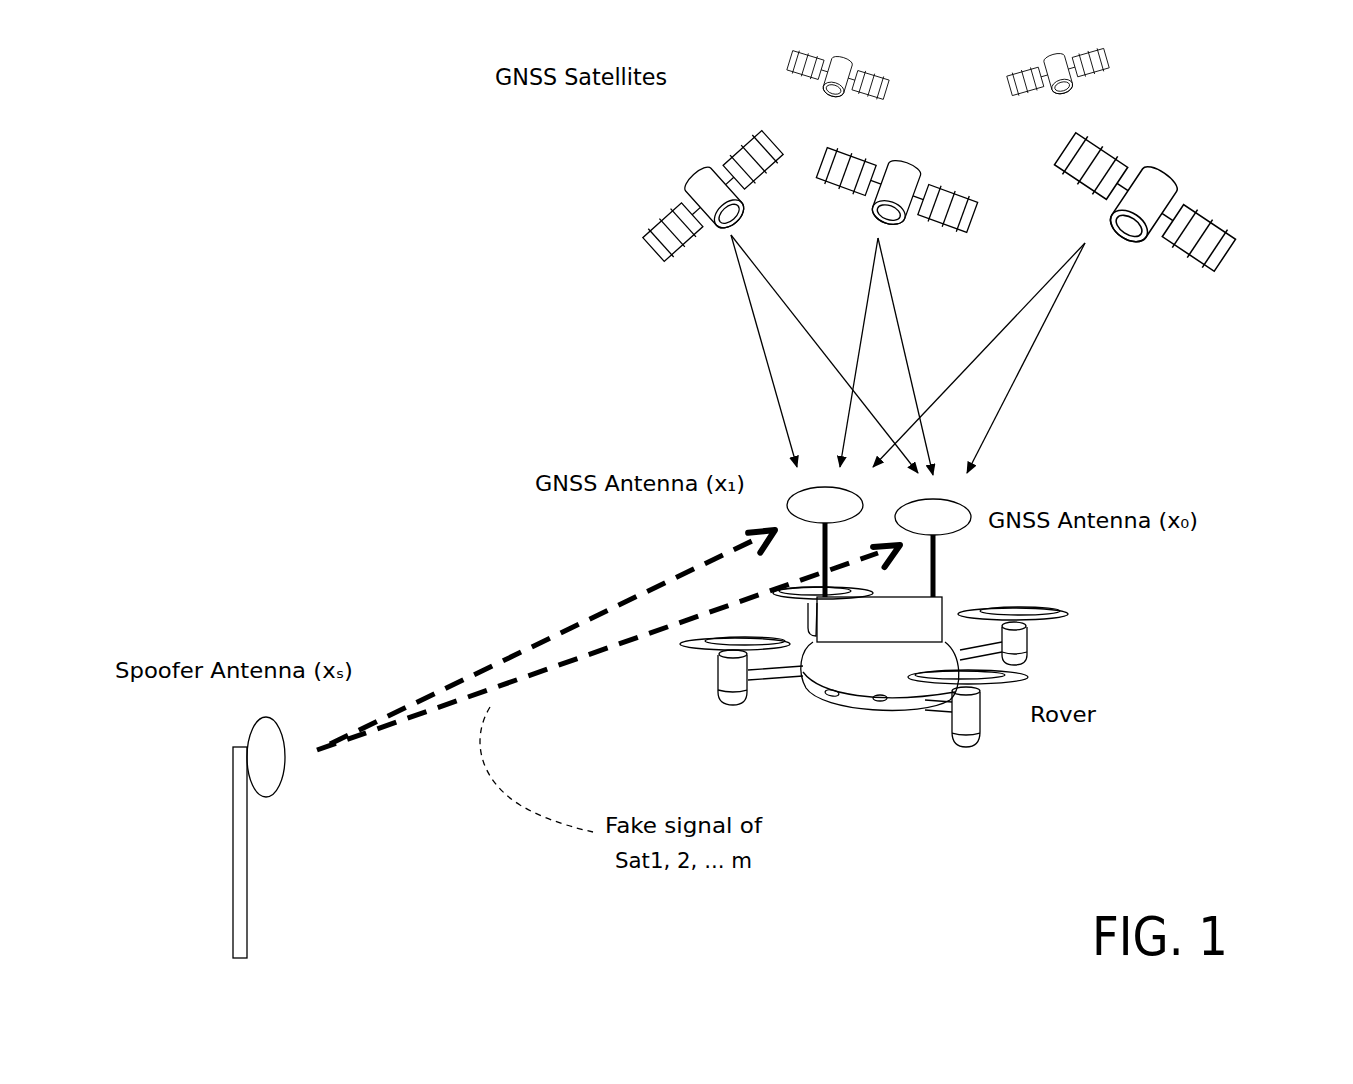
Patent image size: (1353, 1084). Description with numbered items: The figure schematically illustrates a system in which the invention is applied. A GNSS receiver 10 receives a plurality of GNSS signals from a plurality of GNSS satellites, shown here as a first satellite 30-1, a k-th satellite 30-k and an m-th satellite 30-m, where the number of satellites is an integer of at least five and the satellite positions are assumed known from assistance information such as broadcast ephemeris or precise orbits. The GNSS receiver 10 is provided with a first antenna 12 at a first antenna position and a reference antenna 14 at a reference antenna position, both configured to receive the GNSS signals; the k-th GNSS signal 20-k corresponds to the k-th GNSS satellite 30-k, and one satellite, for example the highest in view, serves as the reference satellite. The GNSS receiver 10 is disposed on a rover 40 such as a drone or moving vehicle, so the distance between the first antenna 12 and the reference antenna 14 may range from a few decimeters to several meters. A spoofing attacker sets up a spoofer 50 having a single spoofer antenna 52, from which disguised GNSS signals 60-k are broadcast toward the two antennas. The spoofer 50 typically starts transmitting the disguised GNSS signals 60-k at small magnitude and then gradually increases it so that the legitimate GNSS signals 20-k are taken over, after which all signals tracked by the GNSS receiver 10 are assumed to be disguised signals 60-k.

The GNSS receiver 10 is at (937, 603).
The first antenna 12 is at (800, 497).
The reference antenna 14 is at (953, 510).
The k-th GNSS signal 20-k is at (917, 350).
The GNSS satellite 30-1 is at (697, 177).
The k-th GNSS satellite 30-k is at (910, 167).
The GNSS satellite 30-m is at (1172, 187).
The rover 40 is at (903, 713).
The spoofer 50 is at (247, 912).
The spoofer antenna 52 is at (258, 732).
The k-th disguised GNSS signal 60-k is at (535, 648).